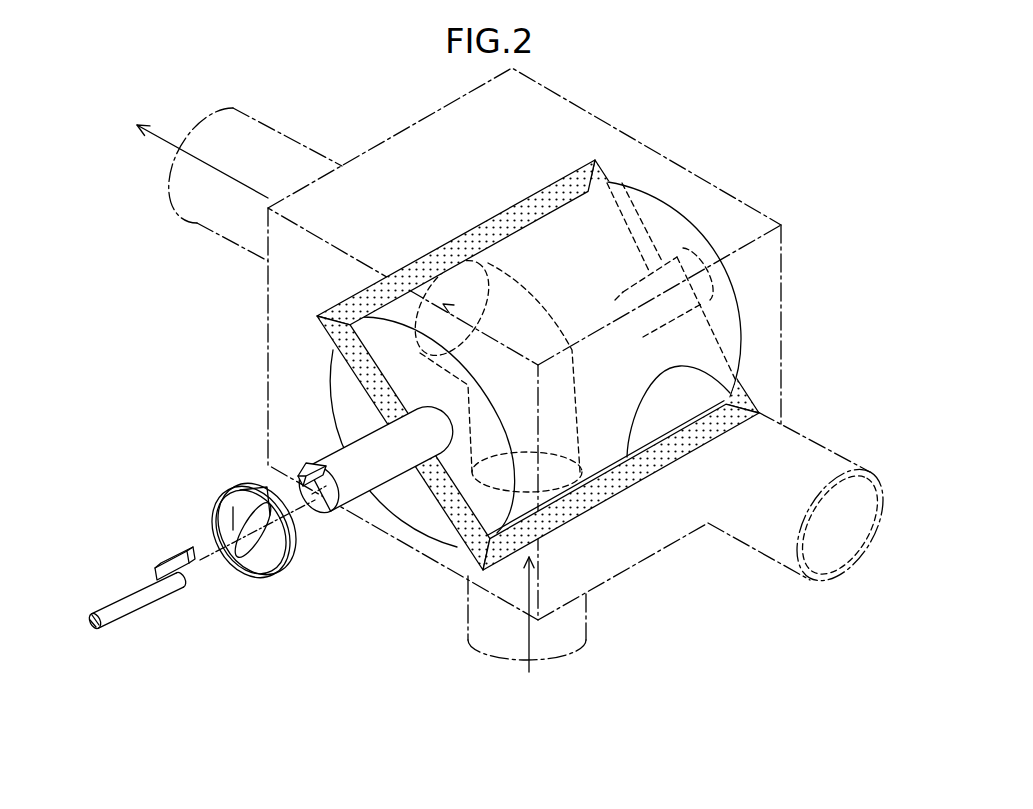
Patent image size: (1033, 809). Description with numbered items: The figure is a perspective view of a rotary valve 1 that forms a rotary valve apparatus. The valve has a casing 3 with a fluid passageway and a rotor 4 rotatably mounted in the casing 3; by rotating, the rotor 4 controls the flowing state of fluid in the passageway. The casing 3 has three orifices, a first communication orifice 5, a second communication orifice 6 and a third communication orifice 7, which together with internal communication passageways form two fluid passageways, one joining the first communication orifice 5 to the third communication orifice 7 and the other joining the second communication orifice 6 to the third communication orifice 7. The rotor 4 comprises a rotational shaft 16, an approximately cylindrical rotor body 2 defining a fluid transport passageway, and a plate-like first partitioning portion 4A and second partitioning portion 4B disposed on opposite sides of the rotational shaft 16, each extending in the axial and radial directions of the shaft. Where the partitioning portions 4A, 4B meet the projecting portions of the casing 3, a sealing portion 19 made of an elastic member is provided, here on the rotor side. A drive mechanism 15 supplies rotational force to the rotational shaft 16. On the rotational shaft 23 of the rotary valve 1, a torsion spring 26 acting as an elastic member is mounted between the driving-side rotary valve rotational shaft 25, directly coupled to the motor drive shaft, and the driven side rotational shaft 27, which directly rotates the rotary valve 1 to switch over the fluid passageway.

The rotary valve 1 is at (732, 172).
The rotor body 2 is at (540, 243).
The casing 3 is at (618, 123).
The rotor 4 is at (705, 235).
The first partitioning portion 4A is at (477, 217).
The second partitioning portion 4B is at (613, 503).
The first communication orifice 5 is at (242, 217).
The second communication orifice 6 is at (702, 467).
The third communication orifice 7 is at (490, 606).
The drive mechanism 15 is at (178, 480).
The rotational shaft 16 is at (776, 290).
The sealing portion 19 is at (413, 258).
The rotational shaft 23 is at (270, 523).
The rotary valve rotational shaft 25 is at (127, 618).
The torsion spring 26 is at (256, 575).
The driven side rotational shaft 27 is at (293, 472).